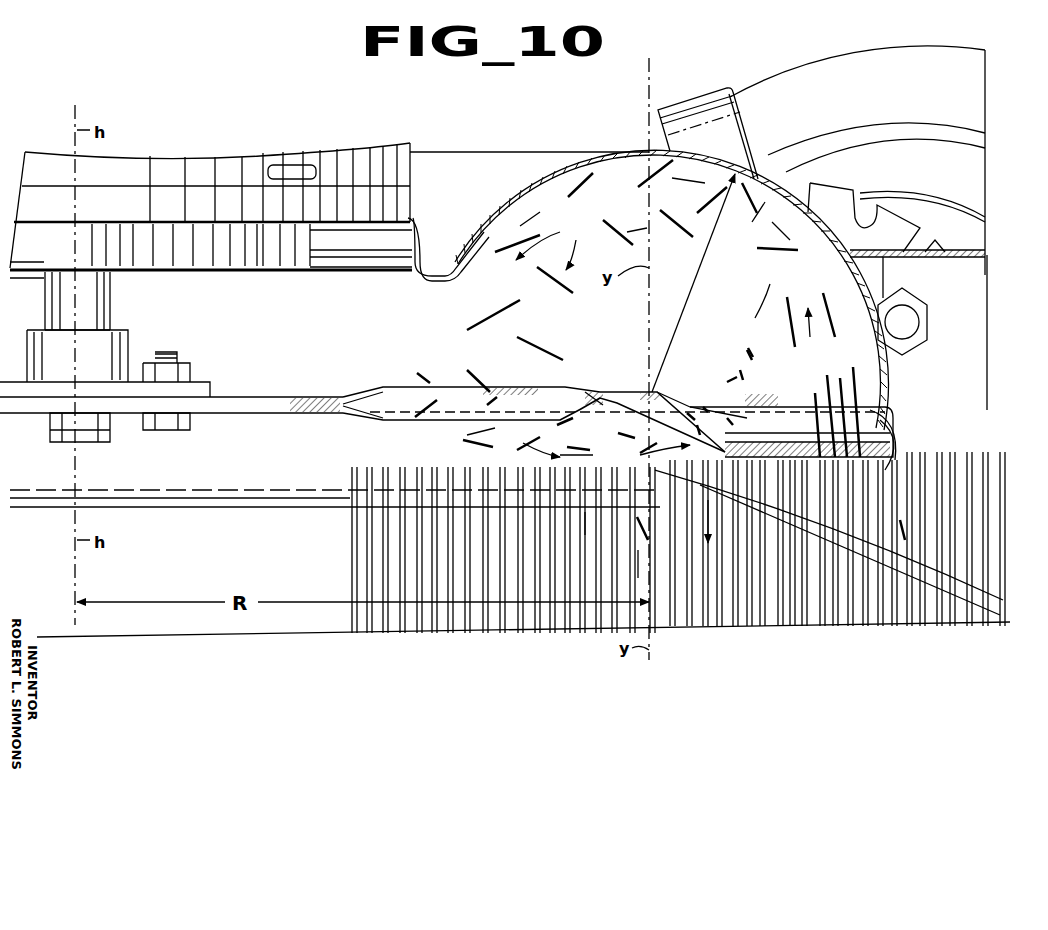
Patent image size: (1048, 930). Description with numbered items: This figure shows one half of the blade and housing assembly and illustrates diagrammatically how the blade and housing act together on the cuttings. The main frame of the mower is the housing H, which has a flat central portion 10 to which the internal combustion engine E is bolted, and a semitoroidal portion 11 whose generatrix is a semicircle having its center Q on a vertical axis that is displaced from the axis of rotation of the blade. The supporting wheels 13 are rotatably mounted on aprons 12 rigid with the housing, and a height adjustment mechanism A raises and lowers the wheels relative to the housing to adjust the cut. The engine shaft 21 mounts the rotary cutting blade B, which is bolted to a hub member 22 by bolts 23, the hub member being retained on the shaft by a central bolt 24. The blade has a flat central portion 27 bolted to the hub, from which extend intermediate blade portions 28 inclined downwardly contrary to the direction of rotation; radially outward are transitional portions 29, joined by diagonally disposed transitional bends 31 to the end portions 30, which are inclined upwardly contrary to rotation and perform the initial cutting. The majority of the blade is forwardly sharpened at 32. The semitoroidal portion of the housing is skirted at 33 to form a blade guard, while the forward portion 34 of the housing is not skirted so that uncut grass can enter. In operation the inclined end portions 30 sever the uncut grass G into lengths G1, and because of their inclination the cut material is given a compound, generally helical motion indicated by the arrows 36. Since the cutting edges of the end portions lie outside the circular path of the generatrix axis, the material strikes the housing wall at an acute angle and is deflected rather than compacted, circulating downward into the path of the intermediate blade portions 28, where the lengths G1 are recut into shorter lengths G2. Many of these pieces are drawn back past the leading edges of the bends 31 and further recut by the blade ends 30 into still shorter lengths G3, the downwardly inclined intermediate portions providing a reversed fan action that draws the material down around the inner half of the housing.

The flat central portion 10 is at (395, 237).
The semitoroidal portion 11 is at (636, 150).
The aprons 12 is at (960, 252).
The supporting wheels 13 is at (912, 89).
The engine shaft 21 is at (95, 300).
The hub member 22 is at (112, 342).
The bolts 23 is at (170, 355).
The central bolt 24 is at (90, 432).
The flat central portion 27 is at (258, 402).
The intermediate blade portions 28 is at (405, 410).
The transitional portions 29 is at (608, 393).
The end portions 30 is at (793, 413).
The transitional bends 31 is at (672, 422).
The forwardly sharpened edge 32 is at (307, 400).
The skirt 33 is at (238, 483).
The forward portion of the housing 34 is at (645, 480).
The arrows 36 is at (663, 257).
The internal combustion engine E is at (210, 148).
The housing H is at (520, 157).
The height adjustment mechanism A is at (834, 188).
The cutting blade B is at (383, 390).
The center of the semicircular generatrix Q is at (654, 392).
The uncut grass G is at (915, 568).
The initially cut lengths G1 is at (625, 232).
The shorter recut lengths G2 is at (480, 437).
The still shorter lengths G3 is at (735, 378).